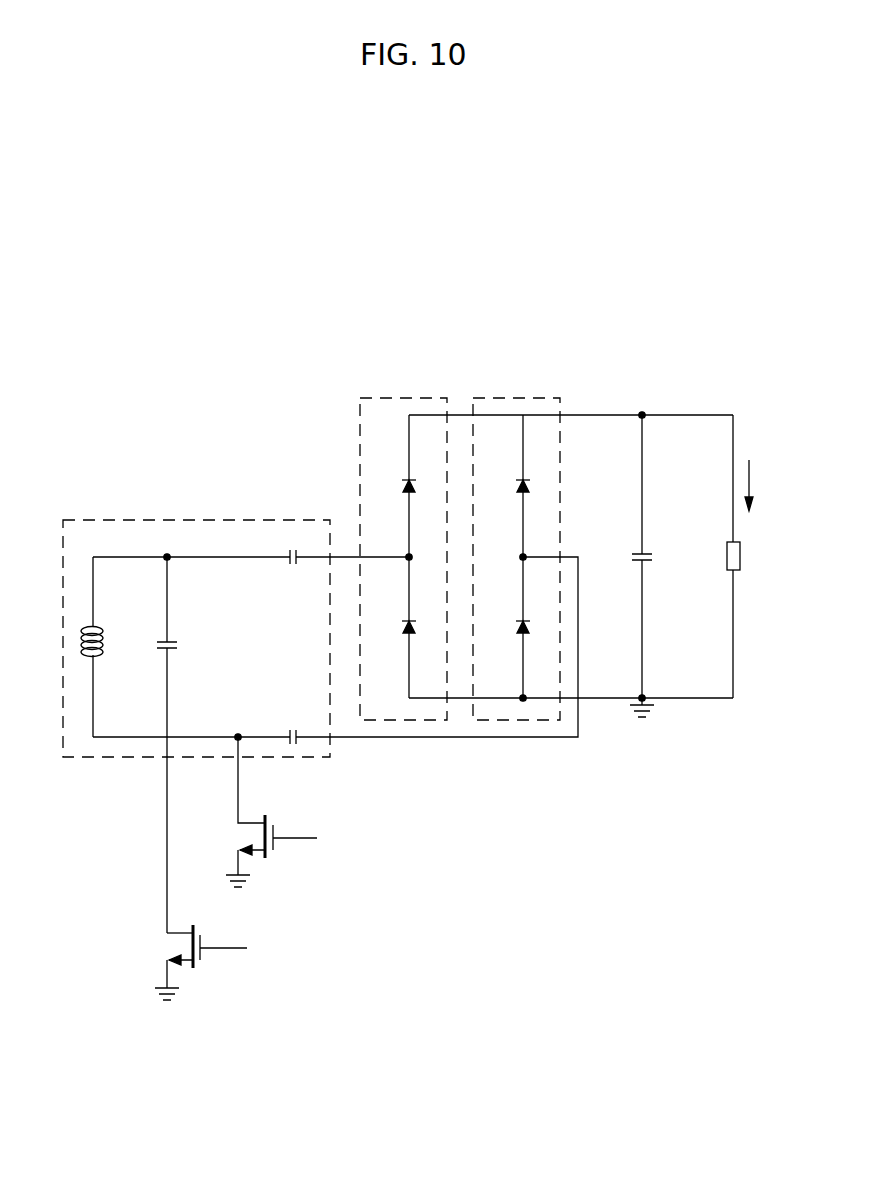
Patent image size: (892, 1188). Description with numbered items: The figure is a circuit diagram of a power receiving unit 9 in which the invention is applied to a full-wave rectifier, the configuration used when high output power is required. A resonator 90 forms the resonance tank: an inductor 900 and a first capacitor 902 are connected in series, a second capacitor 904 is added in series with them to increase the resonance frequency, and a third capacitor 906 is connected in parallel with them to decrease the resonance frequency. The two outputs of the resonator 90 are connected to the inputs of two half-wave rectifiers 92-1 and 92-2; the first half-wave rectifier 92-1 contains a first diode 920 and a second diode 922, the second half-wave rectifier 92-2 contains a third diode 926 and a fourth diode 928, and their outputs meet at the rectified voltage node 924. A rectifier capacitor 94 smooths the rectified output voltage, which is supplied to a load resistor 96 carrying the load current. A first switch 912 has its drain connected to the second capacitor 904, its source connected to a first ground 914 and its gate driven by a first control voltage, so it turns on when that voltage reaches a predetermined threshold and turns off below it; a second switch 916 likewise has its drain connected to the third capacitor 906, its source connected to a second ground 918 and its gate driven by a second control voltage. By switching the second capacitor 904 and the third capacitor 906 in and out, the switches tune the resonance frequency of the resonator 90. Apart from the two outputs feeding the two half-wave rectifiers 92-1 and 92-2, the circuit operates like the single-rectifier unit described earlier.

The wireless power receiver circuit 9 is at (420, 315).
The resonator 90 is at (208, 519).
The half-wave rectifier 92-1 is at (401, 398).
The half-wave rectifier 92-2 is at (515, 398).
The receive coil Lrx 900 is at (99, 660).
The series capacitor Cs 902 is at (290, 565).
The capacitor Cdh 904 is at (298, 744).
The capacitor Cdl 906 is at (175, 642).
The transistor M0 912 is at (270, 853).
The ground connection of M0 914 is at (248, 882).
The transistor M1 916 is at (198, 963).
The ground connection of M1 918 is at (177, 993).
The diode D1 920 is at (415, 479).
The diode D2 922 is at (415, 621).
The rectified voltage node VRECT 924 is at (640, 392).
The diode D3 926 is at (529, 479).
The diode D4 928 is at (529, 621).
The rectifier capacitor CRECT 94 is at (647, 553).
The load resistor RL 96 is at (742, 569).